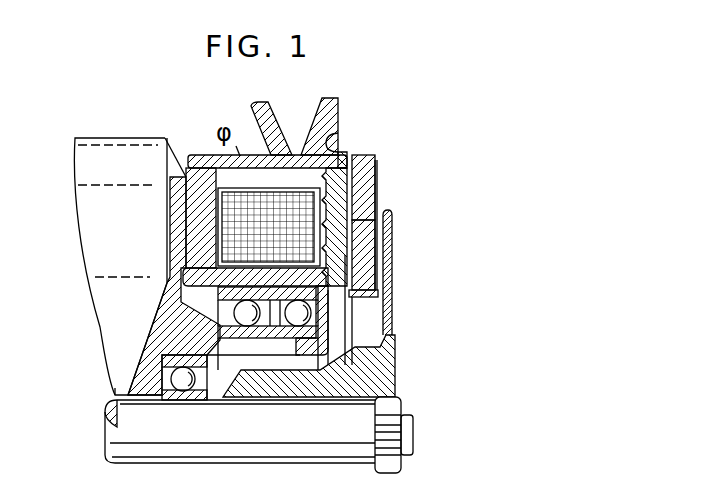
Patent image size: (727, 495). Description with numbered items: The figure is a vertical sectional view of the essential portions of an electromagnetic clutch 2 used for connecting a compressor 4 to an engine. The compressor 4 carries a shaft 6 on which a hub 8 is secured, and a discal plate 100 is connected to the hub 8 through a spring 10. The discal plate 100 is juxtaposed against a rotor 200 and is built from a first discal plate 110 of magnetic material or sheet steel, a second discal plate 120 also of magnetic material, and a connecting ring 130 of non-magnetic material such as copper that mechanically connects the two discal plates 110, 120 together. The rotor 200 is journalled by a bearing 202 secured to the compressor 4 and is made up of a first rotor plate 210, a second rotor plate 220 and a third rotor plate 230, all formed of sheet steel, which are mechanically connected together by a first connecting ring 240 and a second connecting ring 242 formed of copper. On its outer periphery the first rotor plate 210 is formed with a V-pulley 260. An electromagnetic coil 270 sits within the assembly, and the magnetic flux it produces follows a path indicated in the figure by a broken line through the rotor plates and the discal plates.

The electromagnetic clutch 2 is at (227, 180).
The compressor 4 is at (100, 168).
The shaft 6 is at (332, 450).
The hub 8 is at (378, 368).
The spring 10 is at (423, 261).
The discal plate 100 is at (401, 239).
The first discal plate 110 is at (370, 160).
The second discal plate 120 is at (368, 243).
The connecting ring 130 is at (386, 208).
The rotor 200 is at (364, 186).
The bearing 202 is at (220, 312).
The first rotor plate 210 is at (337, 147).
The second rotor plate 220 is at (375, 200).
The third rotor plate 230 is at (350, 300).
The first connecting ring 240 is at (317, 177).
The second connecting ring 242 is at (345, 268).
The V-pulley 260 is at (307, 110).
The electromagnetic coil 270 is at (232, 223).